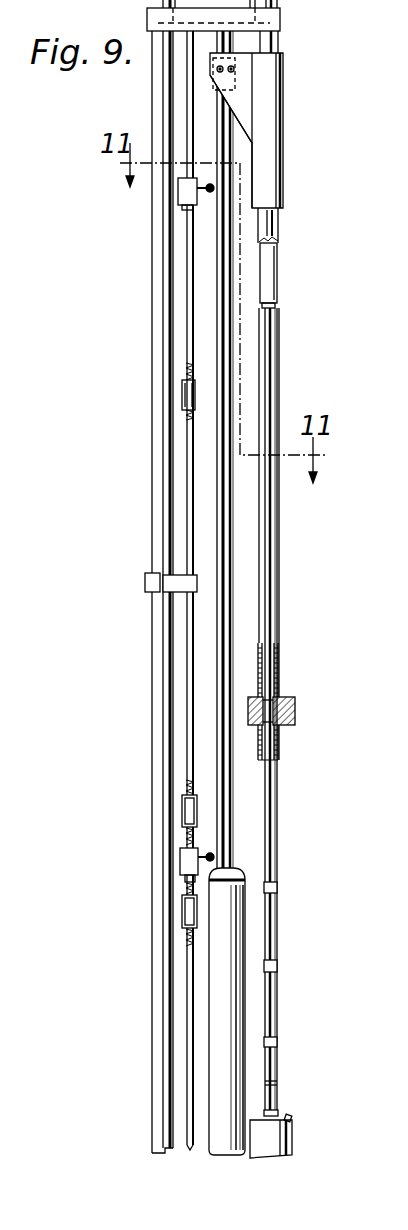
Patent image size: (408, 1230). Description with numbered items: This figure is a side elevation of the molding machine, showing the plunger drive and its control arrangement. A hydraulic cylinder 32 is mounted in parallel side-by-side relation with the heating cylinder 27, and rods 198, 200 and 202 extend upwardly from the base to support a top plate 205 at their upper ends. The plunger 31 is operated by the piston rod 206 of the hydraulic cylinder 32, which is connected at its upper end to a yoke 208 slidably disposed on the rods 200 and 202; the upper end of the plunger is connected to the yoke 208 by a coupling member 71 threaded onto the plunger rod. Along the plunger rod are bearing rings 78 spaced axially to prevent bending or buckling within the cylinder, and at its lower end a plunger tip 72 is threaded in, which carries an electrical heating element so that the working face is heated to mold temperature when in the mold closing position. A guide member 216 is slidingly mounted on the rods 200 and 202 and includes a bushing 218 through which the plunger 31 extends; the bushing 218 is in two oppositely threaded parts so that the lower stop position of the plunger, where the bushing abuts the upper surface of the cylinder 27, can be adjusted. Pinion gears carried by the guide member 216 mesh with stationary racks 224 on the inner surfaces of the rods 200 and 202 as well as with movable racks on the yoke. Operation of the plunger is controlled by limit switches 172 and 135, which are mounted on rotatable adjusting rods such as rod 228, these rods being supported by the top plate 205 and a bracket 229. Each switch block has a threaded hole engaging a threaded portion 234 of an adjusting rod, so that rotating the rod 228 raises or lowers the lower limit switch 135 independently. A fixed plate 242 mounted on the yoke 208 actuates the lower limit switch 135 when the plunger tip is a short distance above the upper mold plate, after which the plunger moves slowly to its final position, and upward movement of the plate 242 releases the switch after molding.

The top plate 205 is at (282, 15).
The yoke 208 is at (283, 108).
The fixed plate 242 is at (213, 87).
The limit switch 172 is at (178, 197).
The rod 200 is at (278, 228).
The coupling member 71 is at (278, 283).
The rod 198 is at (152, 520).
The piston rod 206 is at (252, 512).
The bracket 229 is at (145, 582).
The plunger 31 is at (277, 592).
The rod 202 is at (280, 628).
The stationary rack 224 is at (278, 654).
The guide member 216 is at (319, 705).
The bushing 218 is at (277, 728).
The rod 228 is at (187, 765).
The threaded portion 234 is at (187, 838).
The limit switch 135 is at (180, 865).
The bearing rings 78 is at (277, 886).
The hydraulic cylinder 32 is at (210, 1008).
The plunger tip 72 is at (308, 1096).
The heating cylinder 27 is at (293, 1138).